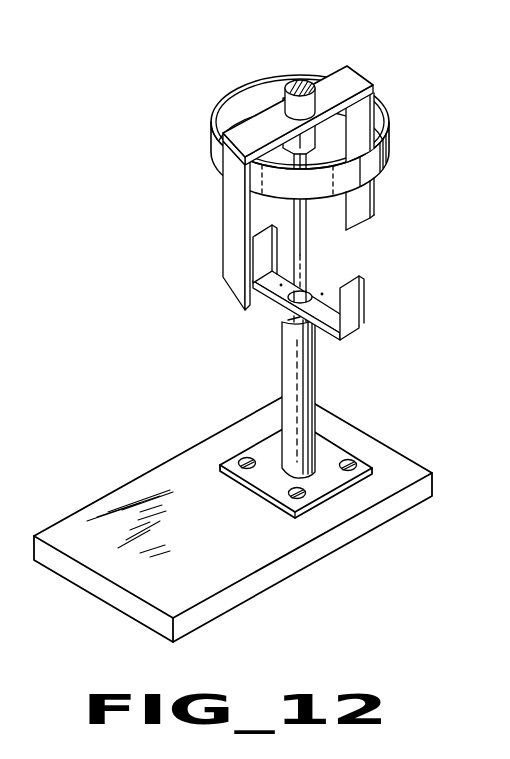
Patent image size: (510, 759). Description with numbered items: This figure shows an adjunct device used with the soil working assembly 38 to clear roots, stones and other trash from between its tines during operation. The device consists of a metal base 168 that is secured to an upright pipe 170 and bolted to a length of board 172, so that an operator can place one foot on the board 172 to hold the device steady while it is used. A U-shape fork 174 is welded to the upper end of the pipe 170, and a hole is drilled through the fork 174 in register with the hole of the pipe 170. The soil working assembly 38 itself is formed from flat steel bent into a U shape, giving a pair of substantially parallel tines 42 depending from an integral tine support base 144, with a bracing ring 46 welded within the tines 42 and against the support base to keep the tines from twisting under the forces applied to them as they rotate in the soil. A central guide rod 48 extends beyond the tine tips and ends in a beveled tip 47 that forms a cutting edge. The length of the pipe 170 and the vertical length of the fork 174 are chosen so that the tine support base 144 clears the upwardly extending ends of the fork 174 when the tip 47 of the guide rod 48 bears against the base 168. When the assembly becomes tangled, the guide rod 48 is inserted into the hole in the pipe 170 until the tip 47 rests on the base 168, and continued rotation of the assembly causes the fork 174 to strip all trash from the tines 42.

The soil working assembly 38 is at (312, 184).
The tines 42 is at (362, 201).
The bracing ring 46 is at (387, 148).
The tip 47 is at (288, 322).
The guide rod 48 is at (302, 258).
The tine support base 144 is at (328, 82).
The metal base 168 is at (336, 452).
The pipe 170 is at (309, 389).
The board 172 is at (337, 539).
The U-shape fork 174 is at (358, 308).